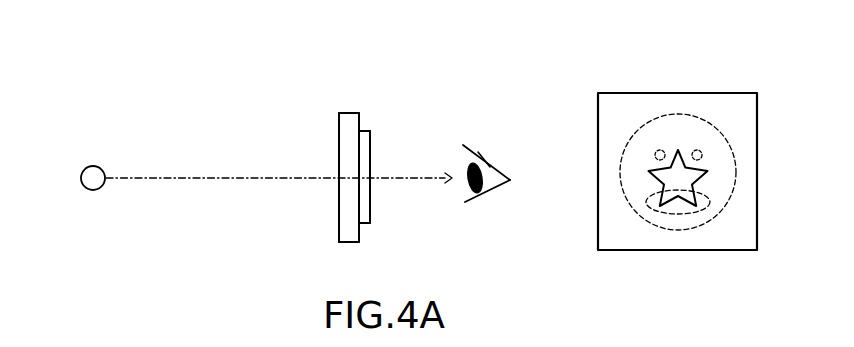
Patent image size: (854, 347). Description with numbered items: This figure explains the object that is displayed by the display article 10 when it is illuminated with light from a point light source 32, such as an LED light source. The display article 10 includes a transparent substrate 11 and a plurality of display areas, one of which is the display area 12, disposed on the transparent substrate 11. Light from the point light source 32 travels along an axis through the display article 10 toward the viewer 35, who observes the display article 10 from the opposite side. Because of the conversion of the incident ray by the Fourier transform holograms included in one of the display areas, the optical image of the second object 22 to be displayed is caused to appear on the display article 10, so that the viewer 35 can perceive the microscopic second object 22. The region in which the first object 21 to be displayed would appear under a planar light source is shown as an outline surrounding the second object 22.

The display article 10 is at (350, 98).
The transparent substrate 11 is at (349, 201).
The display area 12 is at (370, 203).
The first object to be displayed 21 is at (673, 112).
The second object to be displayed 22 is at (658, 179).
The point light source 32 is at (95, 170).
The viewer 35 is at (493, 158).